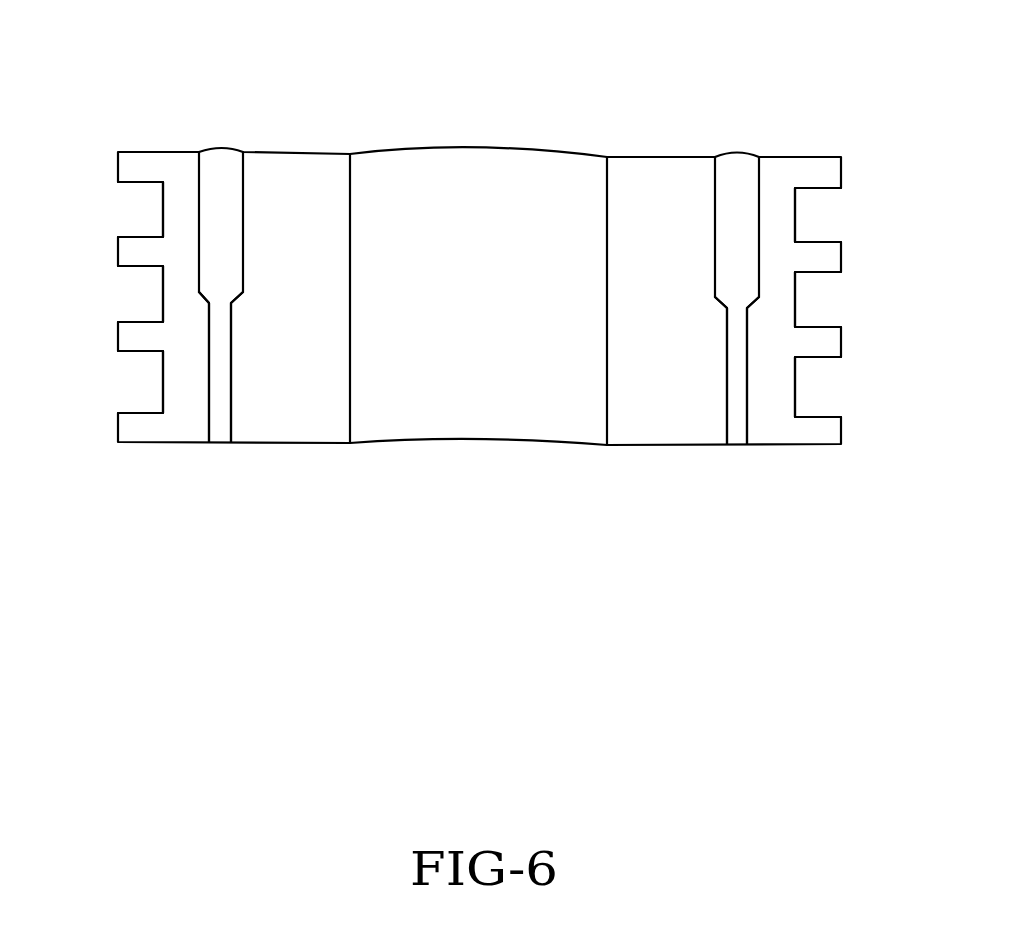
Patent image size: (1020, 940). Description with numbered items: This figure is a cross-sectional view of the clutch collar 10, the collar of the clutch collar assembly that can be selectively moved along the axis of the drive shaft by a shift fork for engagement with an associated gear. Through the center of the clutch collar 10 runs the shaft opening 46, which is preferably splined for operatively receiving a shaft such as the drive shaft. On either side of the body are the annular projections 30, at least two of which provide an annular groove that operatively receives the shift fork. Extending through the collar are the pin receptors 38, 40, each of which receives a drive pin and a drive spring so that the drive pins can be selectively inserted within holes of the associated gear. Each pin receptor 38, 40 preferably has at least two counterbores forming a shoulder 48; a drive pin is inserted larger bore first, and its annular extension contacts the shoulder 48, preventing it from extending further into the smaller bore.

The clutch collar 10 is at (649, 197).
The annular projections 30 is at (133, 338).
The pin receptor 38 is at (211, 173).
The pin receptor 40 is at (730, 167).
The shaft opening 46 is at (477, 218).
The shoulder 48 is at (233, 303).